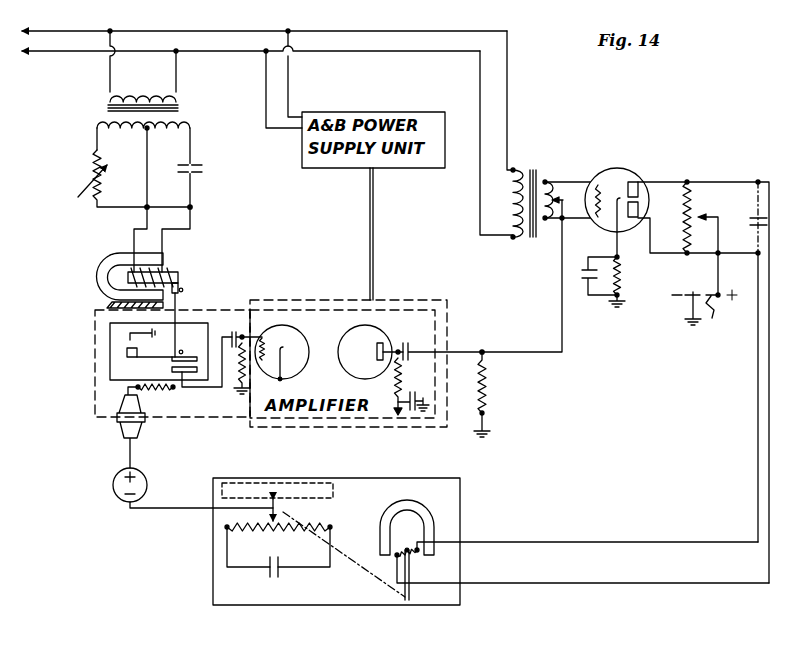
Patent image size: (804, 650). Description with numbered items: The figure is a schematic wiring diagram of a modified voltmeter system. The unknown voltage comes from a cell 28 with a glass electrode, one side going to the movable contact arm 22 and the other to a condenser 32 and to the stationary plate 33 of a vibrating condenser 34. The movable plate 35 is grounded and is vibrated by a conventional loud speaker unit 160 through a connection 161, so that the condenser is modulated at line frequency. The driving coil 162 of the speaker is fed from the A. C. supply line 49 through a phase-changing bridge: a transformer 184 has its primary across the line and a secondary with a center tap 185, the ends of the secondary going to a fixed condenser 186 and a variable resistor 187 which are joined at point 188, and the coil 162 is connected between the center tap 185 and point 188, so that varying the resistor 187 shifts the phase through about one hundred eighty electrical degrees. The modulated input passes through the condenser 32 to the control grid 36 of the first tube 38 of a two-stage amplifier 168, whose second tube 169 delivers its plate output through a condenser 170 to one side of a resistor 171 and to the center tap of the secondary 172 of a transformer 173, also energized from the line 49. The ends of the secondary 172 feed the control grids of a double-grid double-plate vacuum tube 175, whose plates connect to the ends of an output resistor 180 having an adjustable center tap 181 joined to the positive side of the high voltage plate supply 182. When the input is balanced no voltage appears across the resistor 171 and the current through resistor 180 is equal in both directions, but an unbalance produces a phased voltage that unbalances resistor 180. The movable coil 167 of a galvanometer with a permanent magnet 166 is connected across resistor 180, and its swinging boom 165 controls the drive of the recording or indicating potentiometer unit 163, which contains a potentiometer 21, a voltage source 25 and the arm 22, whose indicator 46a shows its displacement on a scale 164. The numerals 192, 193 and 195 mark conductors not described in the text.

The A. C. supply line 49 is at (70, 38).
The supply conductor 193 is at (507, 40).
The supply conductor 192 is at (480, 78).
The transformer 184 is at (110, 98).
The center tap 185 is at (150, 129).
The fixed condenser 186 is at (202, 163).
The variable resistor 187 is at (92, 163).
The point 188 is at (192, 208).
The loud speaker unit 160 is at (95, 275).
The driving coil 162 is at (165, 268).
The connection 161 is at (180, 300).
The vibrating condenser 34 is at (112, 337).
The movable plate 35 is at (172, 360).
The stationary plate 33 is at (193, 374).
The condenser 32 is at (234, 330).
The control grid 36 is at (263, 336).
The first tube 38 is at (297, 328).
The second tube 169 is at (367, 332).
The amplifier 168 is at (432, 297).
The condenser 170 is at (413, 347).
The conductor 195 is at (467, 352).
The resistor 171 is at (485, 380).
The transformer 173 is at (535, 170).
The secondary 172 is at (547, 180).
The double-grid double-plate vacuum tube 175 is at (620, 172).
The output resistor 180 is at (692, 182).
The center tap 181 is at (707, 213).
The high voltage plate supply 182 is at (720, 318).
The cell 28 is at (113, 487).
The scale 164 is at (263, 485).
The movable contact arm 22 is at (271, 510).
The potentiometer 21 is at (240, 535).
The indicator 46a is at (280, 503).
The recording or indicating potentiometer unit 163 is at (213, 575).
The voltage source 25 is at (275, 580).
The permanent magnet 166 is at (417, 510).
The swinging boom 165 is at (408, 577).
The movable coil 167 is at (413, 557).